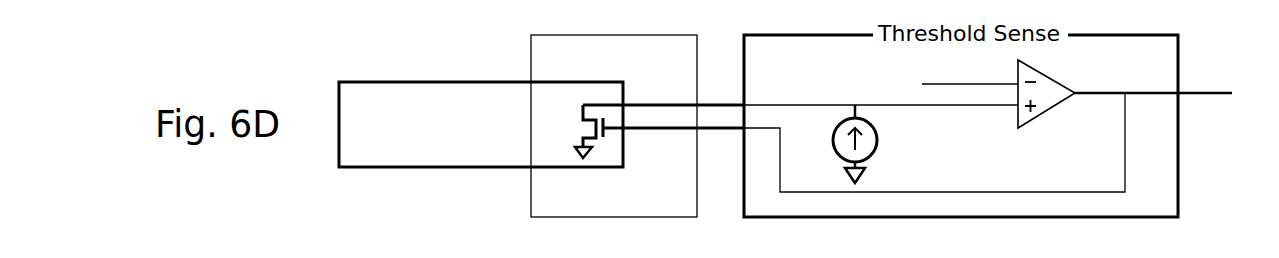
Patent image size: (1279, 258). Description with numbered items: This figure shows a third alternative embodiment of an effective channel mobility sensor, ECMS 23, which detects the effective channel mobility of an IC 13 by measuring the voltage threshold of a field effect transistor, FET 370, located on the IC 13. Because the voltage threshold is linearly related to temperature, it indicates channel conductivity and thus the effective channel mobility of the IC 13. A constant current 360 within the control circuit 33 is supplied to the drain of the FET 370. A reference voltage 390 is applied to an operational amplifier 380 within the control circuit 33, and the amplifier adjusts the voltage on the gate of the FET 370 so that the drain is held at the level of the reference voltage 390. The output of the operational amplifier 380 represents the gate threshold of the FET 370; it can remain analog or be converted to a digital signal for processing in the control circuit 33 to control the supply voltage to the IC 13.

The IC 13 is at (491, 148).
The ECMS 23 is at (531, 51).
The control circuit 33 is at (1180, 56).
The constant current 360 is at (877, 140).
The field effect transistor 370 is at (580, 127).
The operational amplifier 380 is at (1032, 121).
The reference voltage 390 is at (928, 84).